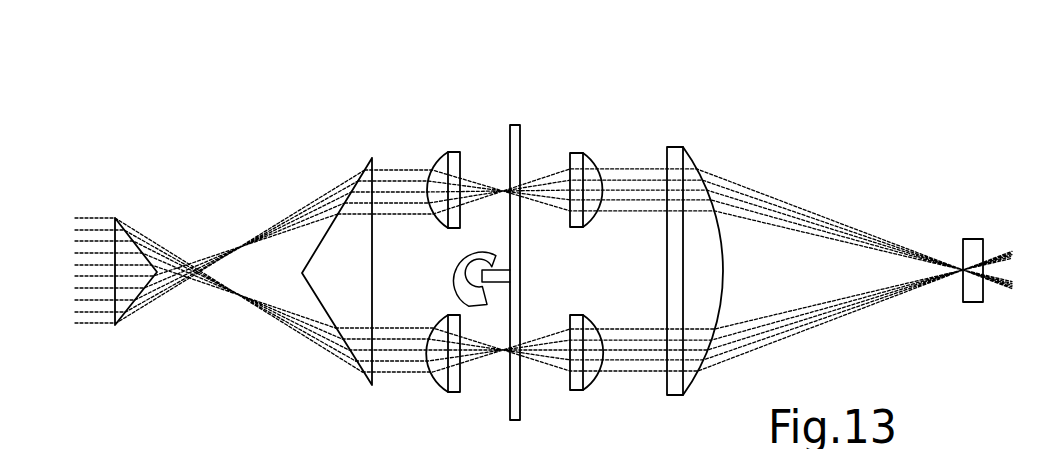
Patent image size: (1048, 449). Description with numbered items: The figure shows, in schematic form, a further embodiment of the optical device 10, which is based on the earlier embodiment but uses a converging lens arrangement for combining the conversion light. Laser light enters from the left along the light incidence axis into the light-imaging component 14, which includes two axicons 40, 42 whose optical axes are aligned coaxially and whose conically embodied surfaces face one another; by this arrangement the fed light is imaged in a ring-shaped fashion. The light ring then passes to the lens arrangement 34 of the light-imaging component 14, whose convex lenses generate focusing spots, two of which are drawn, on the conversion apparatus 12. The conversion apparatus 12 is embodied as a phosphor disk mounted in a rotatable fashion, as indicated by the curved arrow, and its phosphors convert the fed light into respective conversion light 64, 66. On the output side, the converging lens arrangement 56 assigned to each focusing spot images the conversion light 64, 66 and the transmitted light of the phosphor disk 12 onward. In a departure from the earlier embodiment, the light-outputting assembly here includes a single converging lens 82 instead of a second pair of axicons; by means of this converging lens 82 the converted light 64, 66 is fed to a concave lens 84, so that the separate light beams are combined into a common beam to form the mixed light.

The optical device 10 is at (491, 98).
The conversion apparatus 12 is at (517, 143).
The light-imaging component 14 is at (362, 120).
The lens arrangement 34 is at (435, 118).
The axicon 40 is at (125, 227).
The axicon 42 is at (352, 222).
The converging lens arrangement 56 is at (610, 125).
The conversion light 64 is at (542, 183).
The conversion light 66 is at (551, 358).
The converging lens 82 is at (688, 162).
The concave lens 84 is at (972, 240).